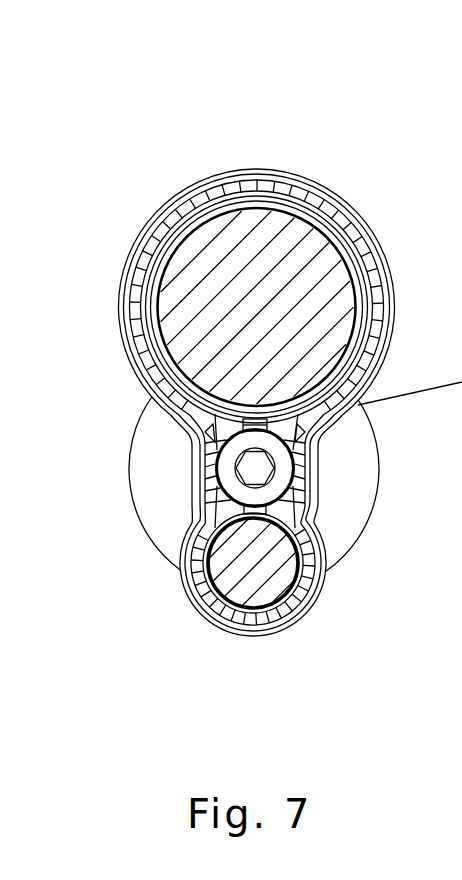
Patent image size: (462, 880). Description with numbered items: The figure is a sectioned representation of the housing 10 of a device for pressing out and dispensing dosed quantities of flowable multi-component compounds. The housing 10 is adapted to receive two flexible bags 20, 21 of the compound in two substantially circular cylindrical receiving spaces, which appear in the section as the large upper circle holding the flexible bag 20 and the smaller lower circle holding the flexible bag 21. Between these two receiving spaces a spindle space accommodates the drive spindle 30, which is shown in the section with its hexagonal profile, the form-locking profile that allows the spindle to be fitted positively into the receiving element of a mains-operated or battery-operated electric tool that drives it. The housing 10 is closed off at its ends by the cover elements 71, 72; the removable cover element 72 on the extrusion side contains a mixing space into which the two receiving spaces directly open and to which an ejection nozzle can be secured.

The housing 10 is at (342, 228).
The flexible bag 20 is at (258, 262).
The flexible bag 21 is at (260, 578).
The drive spindle 30 is at (258, 466).
The cover element 71 is at (157, 462).
The cover element 72 is at (162, 220).